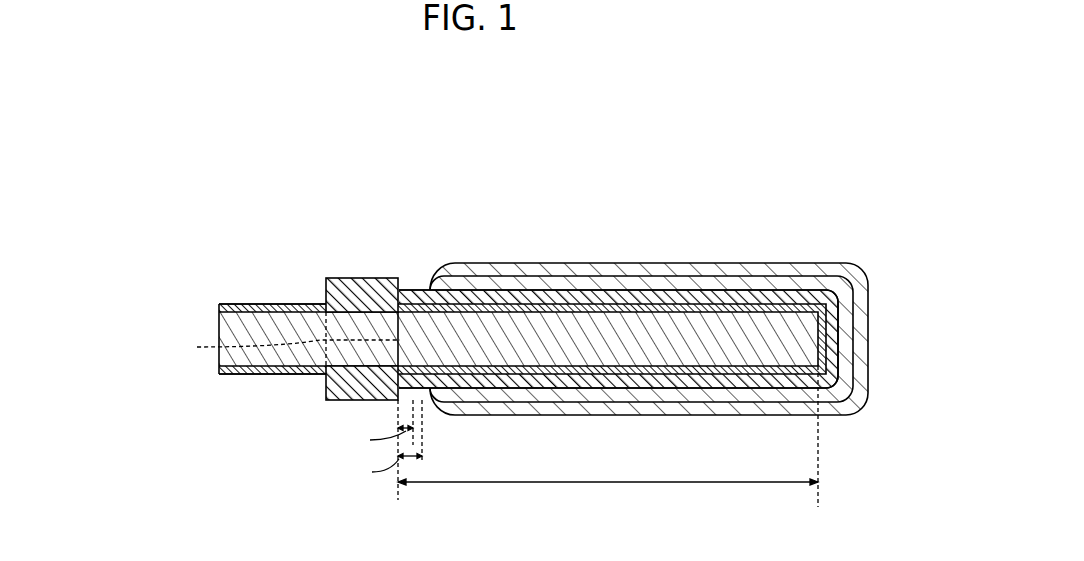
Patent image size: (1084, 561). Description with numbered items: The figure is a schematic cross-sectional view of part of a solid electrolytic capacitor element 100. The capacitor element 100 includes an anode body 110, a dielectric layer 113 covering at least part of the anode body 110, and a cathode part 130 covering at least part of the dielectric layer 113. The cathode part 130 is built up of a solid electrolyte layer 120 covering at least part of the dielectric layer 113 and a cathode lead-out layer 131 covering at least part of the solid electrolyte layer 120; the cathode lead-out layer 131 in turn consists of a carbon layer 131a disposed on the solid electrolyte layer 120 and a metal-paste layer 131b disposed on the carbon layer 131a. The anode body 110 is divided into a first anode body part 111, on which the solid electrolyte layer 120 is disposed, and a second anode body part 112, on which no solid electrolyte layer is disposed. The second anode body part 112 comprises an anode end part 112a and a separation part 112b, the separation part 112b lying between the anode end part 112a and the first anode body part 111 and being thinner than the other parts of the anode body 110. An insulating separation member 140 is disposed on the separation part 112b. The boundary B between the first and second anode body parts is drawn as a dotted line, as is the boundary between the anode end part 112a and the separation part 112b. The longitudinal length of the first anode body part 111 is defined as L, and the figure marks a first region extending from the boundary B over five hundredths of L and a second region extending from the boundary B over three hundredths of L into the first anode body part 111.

The capacitor element 100 is at (218, 158).
The anode body 110 is at (515, 162).
The first anode body part 111 is at (492, 332).
The second anode body part 112 is at (388, 207).
The anode end part 112a is at (273, 330).
The separation part 112b is at (360, 330).
The dielectric layer 113 is at (565, 298).
The solid electrolyte layer 120 is at (650, 294).
The cathode part 130 is at (787, 147).
The cathode lead-out layer 131 is at (832, 192).
The carbon layer 131a is at (735, 284).
The metal-paste layer 131b is at (802, 269).
The separation member 140 is at (313, 301).
The boundary B is at (290, 347).
The length of first anode body part L is at (608, 441).